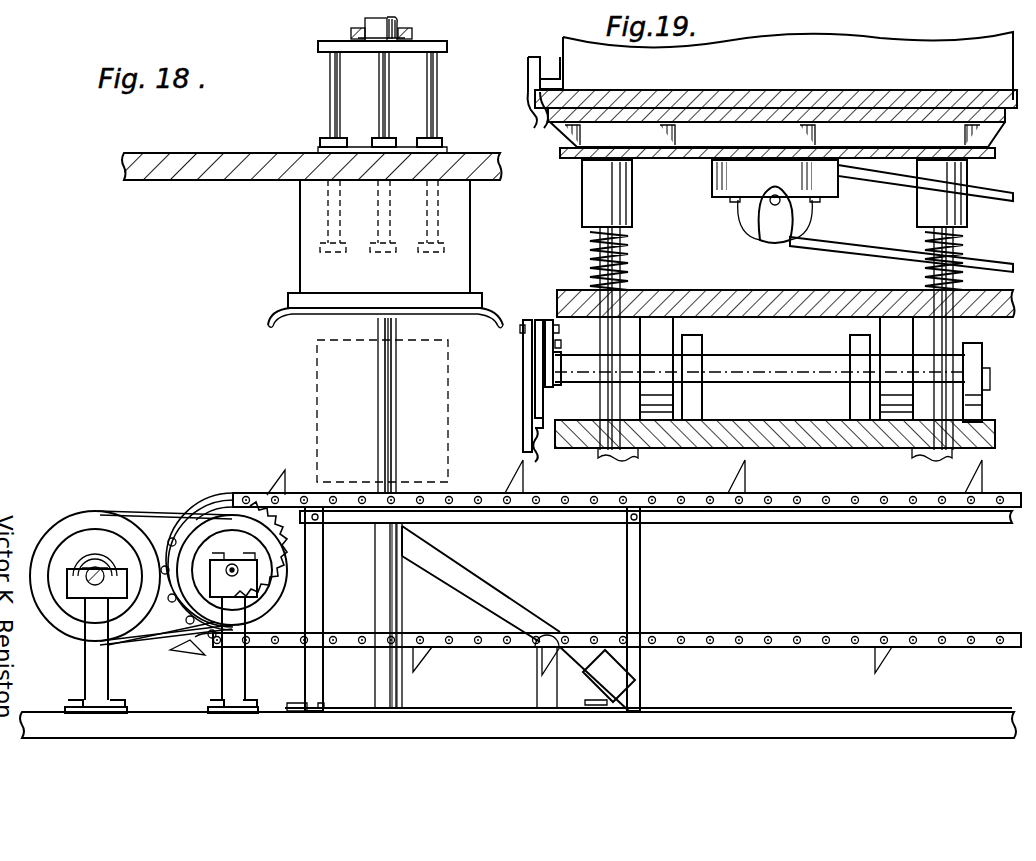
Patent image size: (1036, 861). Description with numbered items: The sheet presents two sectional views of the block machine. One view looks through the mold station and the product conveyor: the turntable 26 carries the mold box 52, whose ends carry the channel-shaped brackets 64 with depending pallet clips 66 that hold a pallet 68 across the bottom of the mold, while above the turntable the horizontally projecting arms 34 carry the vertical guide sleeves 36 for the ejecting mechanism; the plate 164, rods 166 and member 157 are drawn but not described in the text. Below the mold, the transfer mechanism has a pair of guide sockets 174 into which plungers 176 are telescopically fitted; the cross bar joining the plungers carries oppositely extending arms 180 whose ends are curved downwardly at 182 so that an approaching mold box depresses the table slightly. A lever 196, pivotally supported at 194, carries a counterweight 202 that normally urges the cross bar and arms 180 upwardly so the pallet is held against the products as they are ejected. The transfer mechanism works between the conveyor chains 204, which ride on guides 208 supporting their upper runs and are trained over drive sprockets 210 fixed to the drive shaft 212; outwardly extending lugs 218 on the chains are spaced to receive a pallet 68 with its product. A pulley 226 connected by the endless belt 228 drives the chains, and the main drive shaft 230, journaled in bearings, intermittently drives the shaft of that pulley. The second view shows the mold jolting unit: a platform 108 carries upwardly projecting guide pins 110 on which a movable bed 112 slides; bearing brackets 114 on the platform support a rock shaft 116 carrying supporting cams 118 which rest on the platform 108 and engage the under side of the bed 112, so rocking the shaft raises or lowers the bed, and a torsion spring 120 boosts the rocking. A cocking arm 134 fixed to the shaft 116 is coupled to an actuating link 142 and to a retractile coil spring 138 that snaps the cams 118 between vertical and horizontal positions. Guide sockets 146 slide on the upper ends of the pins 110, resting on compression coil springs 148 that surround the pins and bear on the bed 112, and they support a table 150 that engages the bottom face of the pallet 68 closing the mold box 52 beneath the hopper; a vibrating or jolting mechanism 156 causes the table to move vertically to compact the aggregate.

In FIG. 18, the turntable 26 is at (218, 182).
In FIG. 18, the horizontally projecting arms 34 is at (351, 31).
In FIG. 18, the vertical guide sleeves 36 is at (412, 28).
In FIG. 18, the mold box 52 is at (302, 227).
In FIG. 19, the mold box 52 is at (950, 45).
In FIG. 19, the channel-shaped brackets 64 is at (562, 72).
In FIG. 19, the pallet clips 66 is at (520, 112).
In FIG. 18, the pallet 68 is at (298, 298).
In FIG. 19, the pallet 68 is at (740, 90).
In FIG. 19, the platform 108 is at (826, 440).
In FIG. 19, the guide pins 110 is at (600, 336).
In FIG. 19, the movable bed 112 is at (710, 290).
In FIG. 19, the bearing brackets 114 is at (704, 405).
In FIG. 19, the rock shaft 116 is at (770, 340).
In FIG. 19, the supporting cams 118 is at (676, 332).
In FIG. 19, the torsion spring 120 is at (990, 400).
In FIG. 19, the cocking arm 134 is at (519, 368).
In FIG. 19, the retractile coil spring 138 is at (548, 455).
In FIG. 19, the actuating link 142 is at (563, 350).
In FIG. 19, the guide sockets 146 is at (582, 190).
In FIG. 19, the compression coil springs 148 is at (590, 263).
In FIG. 19, the table 150 is at (806, 108).
In FIG. 19, the vibrating or jolting mechanism 156 is at (842, 255).
In FIG. 19, the lever 157 is at (786, 230).
In FIG. 18, the top plate 164 is at (448, 46).
In FIG. 18, the rod 166 is at (330, 94).
In FIG. 18, the guide sockets 174 is at (378, 578).
In FIG. 18, the plungers 176 is at (383, 334).
In FIG. 18, the arms 180 is at (446, 322).
In FIG. 18, the downwardly curved ends 182 is at (270, 330).
In FIG. 18, the pivot 194 is at (545, 655).
In FIG. 18, the lever 196 is at (478, 590).
In FIG. 18, the counterweight 202 is at (618, 680).
In FIG. 18, the conveyor chains 204 is at (253, 492).
In FIG. 18, the guides 208 is at (752, 527).
In FIG. 18, the drive sprockets 210 is at (290, 565).
In FIG. 18, the drive shaft 212 is at (236, 555).
In FIG. 18, the lugs 218 is at (496, 482).
In FIG. 18, the pulley 226 is at (88, 518).
In FIG. 18, the endless belt 228 is at (149, 518).
In FIG. 18, the main drive shaft 230 is at (85, 592).